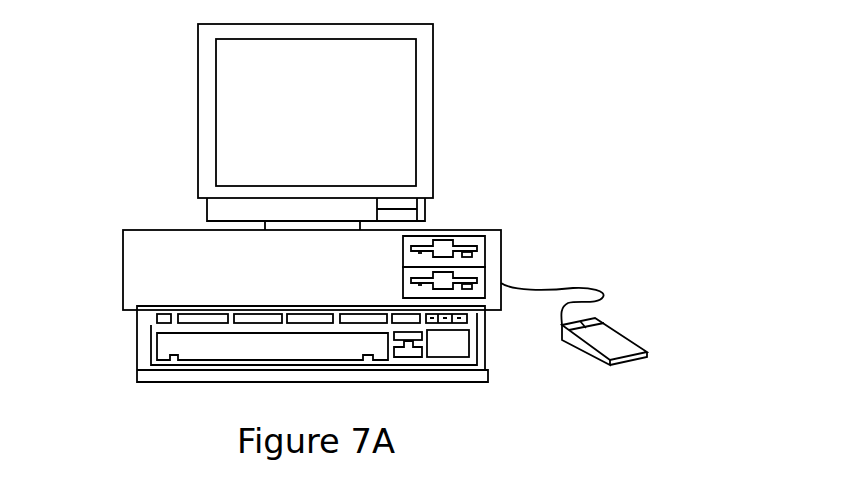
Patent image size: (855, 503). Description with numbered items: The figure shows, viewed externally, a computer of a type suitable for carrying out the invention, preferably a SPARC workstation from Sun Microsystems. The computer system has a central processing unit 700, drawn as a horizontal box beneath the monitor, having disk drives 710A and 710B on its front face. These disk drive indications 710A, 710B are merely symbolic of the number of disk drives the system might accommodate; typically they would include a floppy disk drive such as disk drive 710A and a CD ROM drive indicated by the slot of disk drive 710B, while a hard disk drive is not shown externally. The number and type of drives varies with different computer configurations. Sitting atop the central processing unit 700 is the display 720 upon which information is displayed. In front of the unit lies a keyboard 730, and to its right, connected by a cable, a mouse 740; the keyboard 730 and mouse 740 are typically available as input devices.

The central processing unit 700 is at (123, 268).
The disk drive 710A is at (403, 257).
The disk drive 710B is at (403, 289).
The display 720 is at (428, 97).
The keyboard 730 is at (138, 347).
The mouse 740 is at (613, 333).